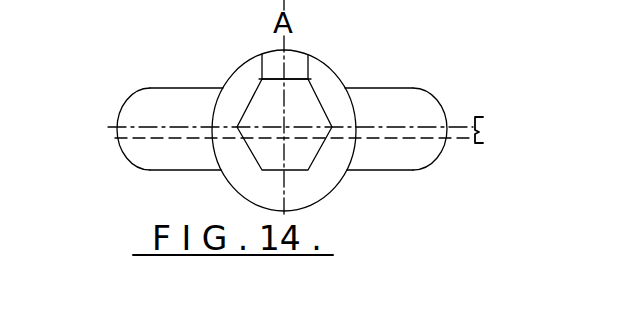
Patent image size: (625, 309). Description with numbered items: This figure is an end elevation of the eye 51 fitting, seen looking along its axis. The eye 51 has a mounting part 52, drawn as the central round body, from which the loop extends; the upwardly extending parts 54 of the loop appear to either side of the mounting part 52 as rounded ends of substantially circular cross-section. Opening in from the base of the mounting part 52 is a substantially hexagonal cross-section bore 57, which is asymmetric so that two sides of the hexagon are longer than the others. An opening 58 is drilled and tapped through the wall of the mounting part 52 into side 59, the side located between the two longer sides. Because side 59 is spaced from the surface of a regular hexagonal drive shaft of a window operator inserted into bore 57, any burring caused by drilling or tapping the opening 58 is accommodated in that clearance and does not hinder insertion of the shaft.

The eye 51 is at (452, 85).
The mounting part 52 is at (330, 180).
The upwardly extending parts 54 is at (140, 147).
The hexagonal cross-section bore 57 is at (303, 123).
The opening 58 is at (257, 53).
The side 59 is at (290, 75).